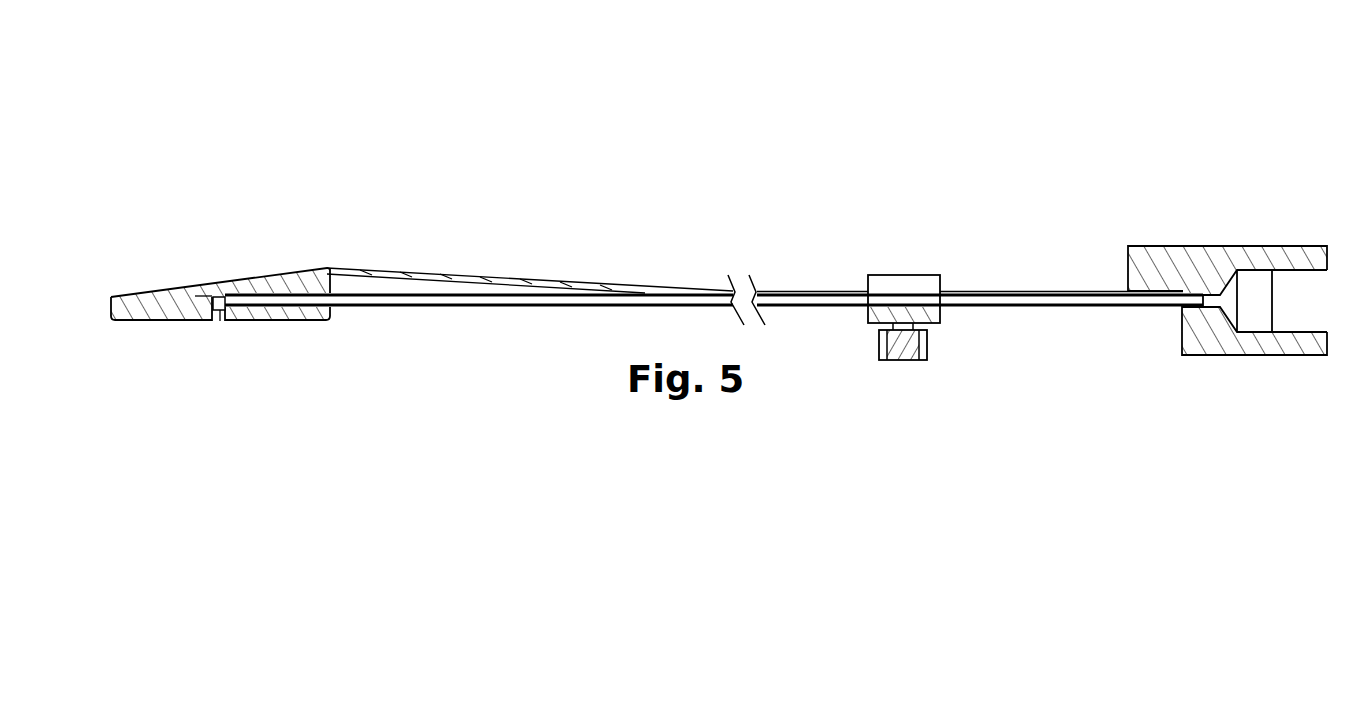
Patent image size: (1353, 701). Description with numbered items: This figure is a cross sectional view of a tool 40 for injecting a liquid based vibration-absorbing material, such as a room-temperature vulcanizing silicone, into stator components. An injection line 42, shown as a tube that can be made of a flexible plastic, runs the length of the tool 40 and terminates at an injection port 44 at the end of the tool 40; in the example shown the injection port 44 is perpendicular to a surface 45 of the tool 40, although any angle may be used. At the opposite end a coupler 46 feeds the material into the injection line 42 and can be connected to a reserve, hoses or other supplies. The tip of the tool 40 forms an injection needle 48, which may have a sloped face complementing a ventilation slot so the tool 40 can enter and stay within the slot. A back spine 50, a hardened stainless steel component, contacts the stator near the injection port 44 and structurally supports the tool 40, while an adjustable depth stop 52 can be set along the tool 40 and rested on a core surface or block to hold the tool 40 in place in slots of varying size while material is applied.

The tool 40 is at (361, 139).
The injection line 42 is at (675, 302).
The injection port 44 is at (218, 320).
The surface 45 is at (148, 322).
The coupler 46 is at (1255, 287).
The injection needle 48 is at (153, 290).
The back spine 50 is at (410, 272).
The adjustable depth stop 52 is at (903, 347).